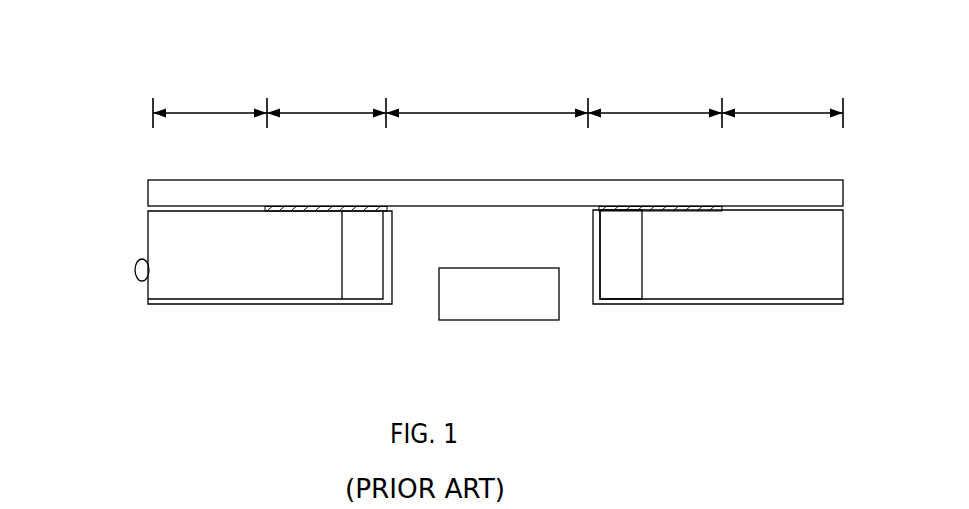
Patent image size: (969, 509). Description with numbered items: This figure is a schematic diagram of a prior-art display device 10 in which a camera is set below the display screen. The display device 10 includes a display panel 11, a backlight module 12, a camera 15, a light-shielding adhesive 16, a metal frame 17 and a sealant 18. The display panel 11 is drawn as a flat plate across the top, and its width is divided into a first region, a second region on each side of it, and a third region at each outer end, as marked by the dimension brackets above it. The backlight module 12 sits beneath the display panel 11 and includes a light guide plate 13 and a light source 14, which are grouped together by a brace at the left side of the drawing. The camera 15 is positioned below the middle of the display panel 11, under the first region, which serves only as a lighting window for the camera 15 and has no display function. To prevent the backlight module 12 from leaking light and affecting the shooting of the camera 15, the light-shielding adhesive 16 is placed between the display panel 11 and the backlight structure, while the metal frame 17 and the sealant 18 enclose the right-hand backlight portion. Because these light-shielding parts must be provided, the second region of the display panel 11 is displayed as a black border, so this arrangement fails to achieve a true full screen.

The display device 10 is at (108, 40).
The display panel 11 is at (821, 180).
The backlight module 12 is at (50, 212).
The light guide plate 13 is at (148, 240).
The light source 14 is at (135, 268).
The camera 15 is at (484, 320).
The light-shielding adhesive 16 is at (680, 212).
The metal frame 17 is at (708, 296).
The sealant 18 is at (616, 285).